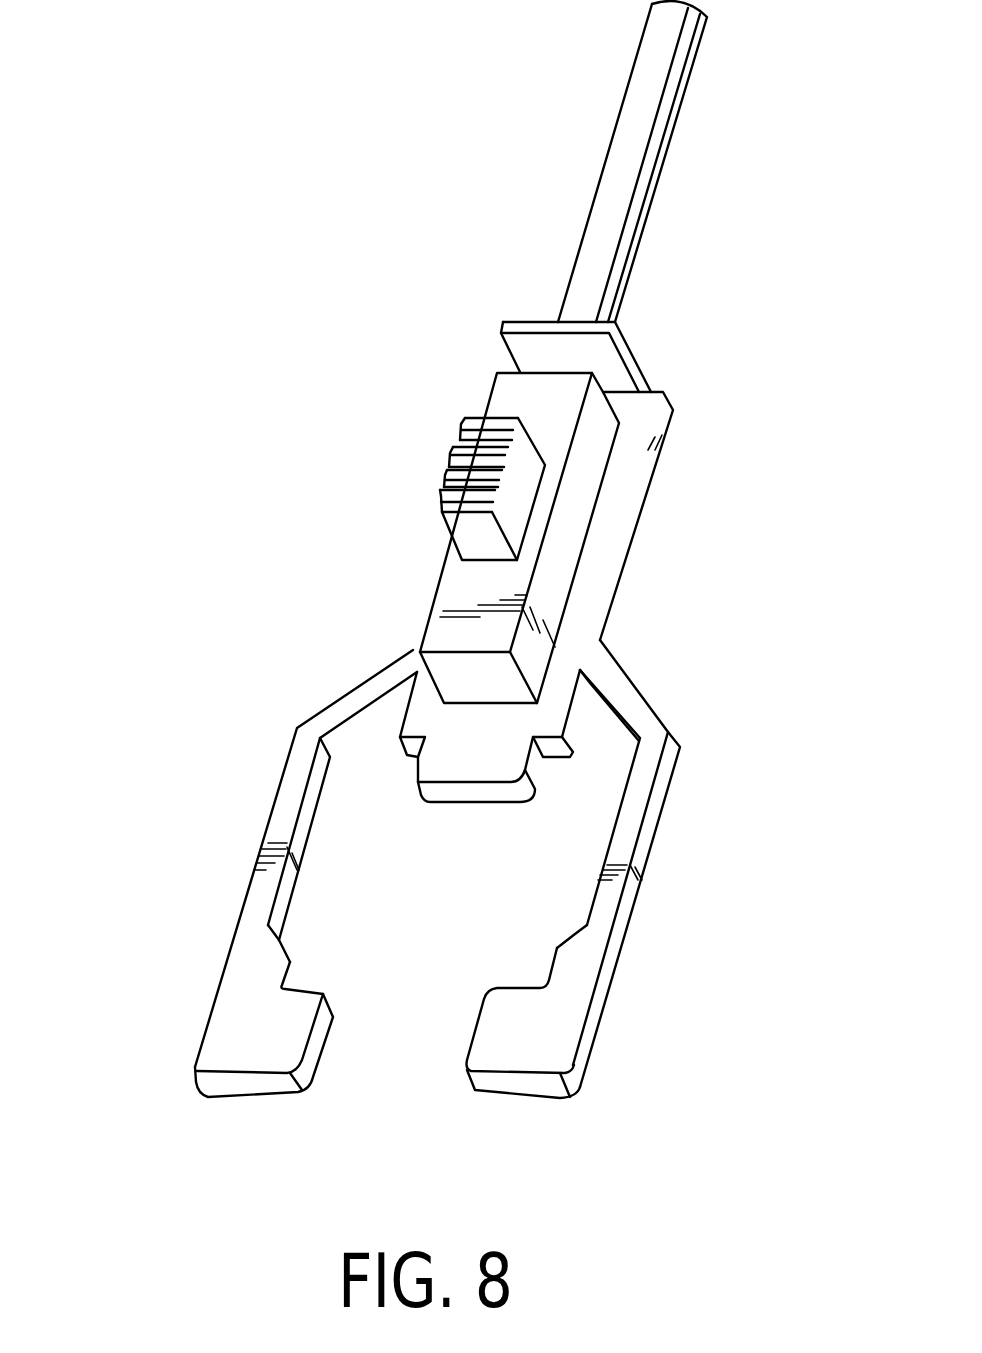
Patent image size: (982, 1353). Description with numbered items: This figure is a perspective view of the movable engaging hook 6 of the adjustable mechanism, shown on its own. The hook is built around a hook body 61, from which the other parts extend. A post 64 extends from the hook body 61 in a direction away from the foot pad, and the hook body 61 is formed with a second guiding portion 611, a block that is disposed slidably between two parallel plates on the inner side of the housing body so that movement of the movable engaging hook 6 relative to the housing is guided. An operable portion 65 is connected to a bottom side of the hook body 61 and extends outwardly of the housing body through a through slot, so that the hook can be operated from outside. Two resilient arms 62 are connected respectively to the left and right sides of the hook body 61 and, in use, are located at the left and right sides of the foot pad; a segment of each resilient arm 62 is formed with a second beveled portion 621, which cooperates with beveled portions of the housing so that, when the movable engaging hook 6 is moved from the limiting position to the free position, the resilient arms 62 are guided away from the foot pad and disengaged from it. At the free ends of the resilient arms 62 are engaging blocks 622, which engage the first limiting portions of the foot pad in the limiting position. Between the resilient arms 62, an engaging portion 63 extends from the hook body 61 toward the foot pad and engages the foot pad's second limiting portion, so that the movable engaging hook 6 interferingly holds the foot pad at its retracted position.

The movable engaging hook 6 is at (268, 497).
The hook body 61 is at (610, 532).
The second guiding portion 611 is at (598, 356).
The resilient arms 62 is at (355, 700).
The second beveled portion 621 is at (270, 937).
The engaging blocks 622 is at (287, 1043).
The engaging portion 63 is at (465, 768).
The post 64 is at (627, 227).
The operable portion 65 is at (455, 452).